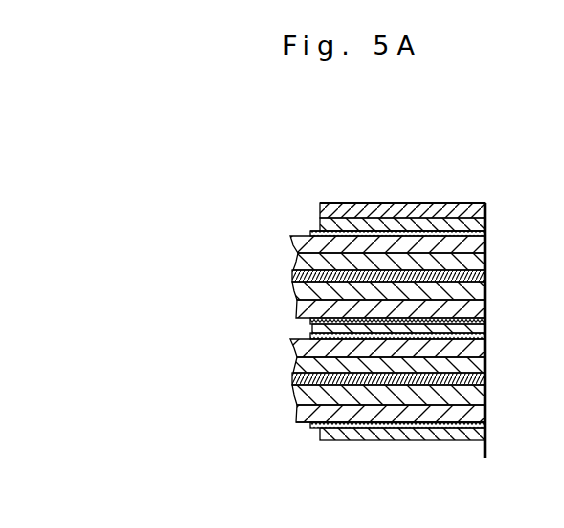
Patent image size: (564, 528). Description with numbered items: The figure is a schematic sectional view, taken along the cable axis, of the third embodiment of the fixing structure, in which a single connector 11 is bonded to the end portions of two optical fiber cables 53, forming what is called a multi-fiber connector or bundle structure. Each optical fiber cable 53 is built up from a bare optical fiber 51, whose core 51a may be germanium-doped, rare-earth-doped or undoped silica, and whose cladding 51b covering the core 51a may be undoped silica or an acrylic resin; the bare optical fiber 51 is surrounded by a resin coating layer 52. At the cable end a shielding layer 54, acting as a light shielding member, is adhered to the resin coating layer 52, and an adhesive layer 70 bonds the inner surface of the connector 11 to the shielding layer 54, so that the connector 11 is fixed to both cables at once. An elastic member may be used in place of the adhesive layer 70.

The connector 11 is at (363, 203).
The bare optical fiber 51 is at (320, 275).
The core 51a is at (292, 278).
The cladding 51b is at (295, 259).
The resin coating layer 52 is at (297, 245).
The optical fiber cable 53 is at (303, 233).
The shielding layer 54 is at (452, 233).
The adhesive layer 70 is at (420, 224).